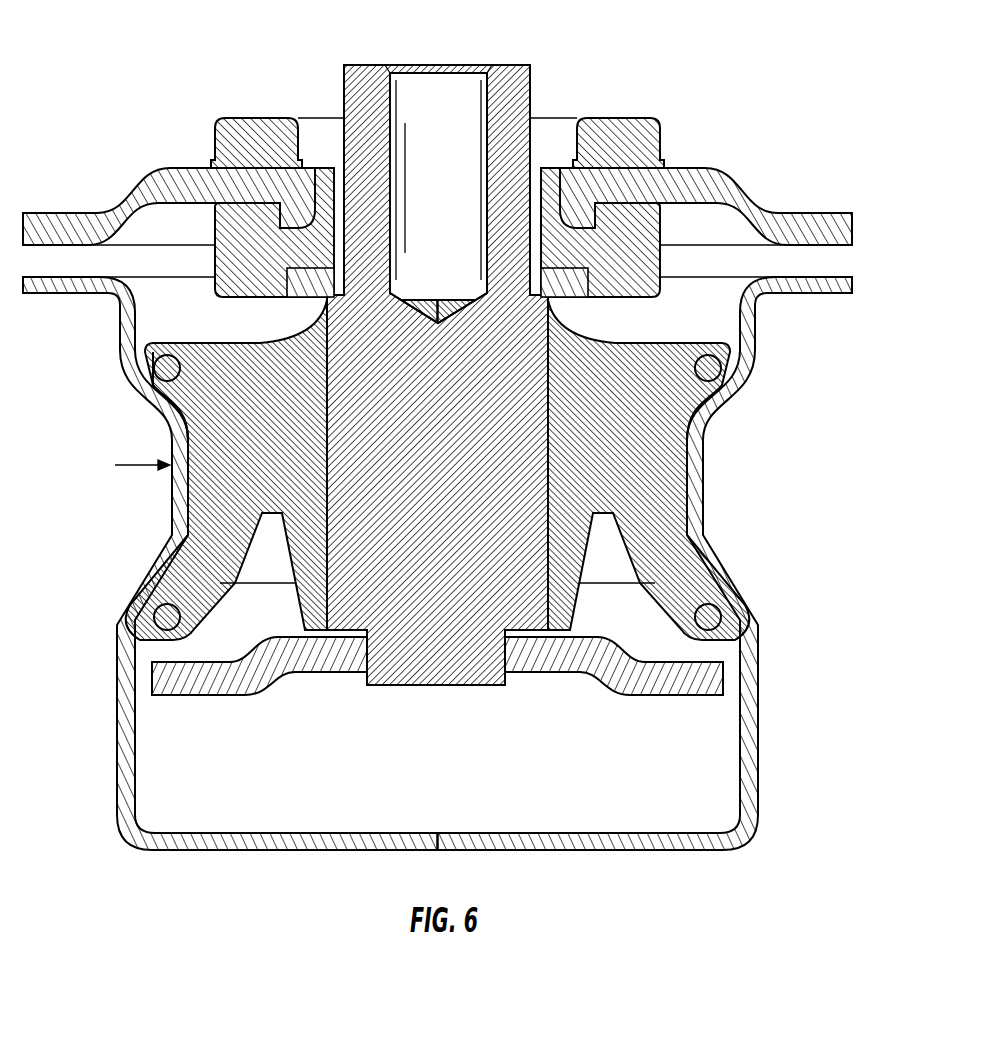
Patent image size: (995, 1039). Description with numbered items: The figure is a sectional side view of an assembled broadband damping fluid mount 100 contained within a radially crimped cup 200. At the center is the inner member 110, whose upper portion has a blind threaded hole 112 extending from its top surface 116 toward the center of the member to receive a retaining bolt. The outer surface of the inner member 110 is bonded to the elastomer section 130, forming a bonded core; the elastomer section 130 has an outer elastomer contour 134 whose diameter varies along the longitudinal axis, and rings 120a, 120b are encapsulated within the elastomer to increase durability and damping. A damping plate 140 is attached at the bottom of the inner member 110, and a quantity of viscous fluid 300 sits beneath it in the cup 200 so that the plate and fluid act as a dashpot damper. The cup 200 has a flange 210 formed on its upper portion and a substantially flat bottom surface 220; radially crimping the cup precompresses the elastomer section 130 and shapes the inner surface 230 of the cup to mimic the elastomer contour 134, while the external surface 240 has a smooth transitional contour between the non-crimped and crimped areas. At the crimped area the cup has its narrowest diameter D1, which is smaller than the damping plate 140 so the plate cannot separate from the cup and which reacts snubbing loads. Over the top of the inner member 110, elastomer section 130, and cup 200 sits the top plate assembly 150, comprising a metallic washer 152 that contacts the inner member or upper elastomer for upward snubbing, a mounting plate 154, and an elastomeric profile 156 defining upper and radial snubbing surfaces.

The broadband damping fluid mount 100 is at (446, 456).
The inner member 110 is at (482, 347).
The blind threaded hole 112 is at (452, 113).
The top surface 116 is at (363, 65).
The ring 120a is at (165, 617).
The ring 120b is at (163, 368).
The elastomer section 130 is at (438, 477).
The elastomer contour 134 is at (162, 415).
The damping plate 140 is at (723, 677).
The top plate assembly 150 is at (437, 176).
The metallic washer 152 is at (590, 268).
The mounting plate 154 is at (68, 210).
The elastomeric profile 156 is at (242, 117).
The cup 200 is at (451, 536).
The flange 210 is at (838, 277).
The bottom surface 220 is at (303, 851).
The inner surface 230 is at (190, 490).
The external surface 240 is at (703, 500).
The viscous fluid 300 is at (196, 766).
The crimped cup diameter D1 is at (718, 465).